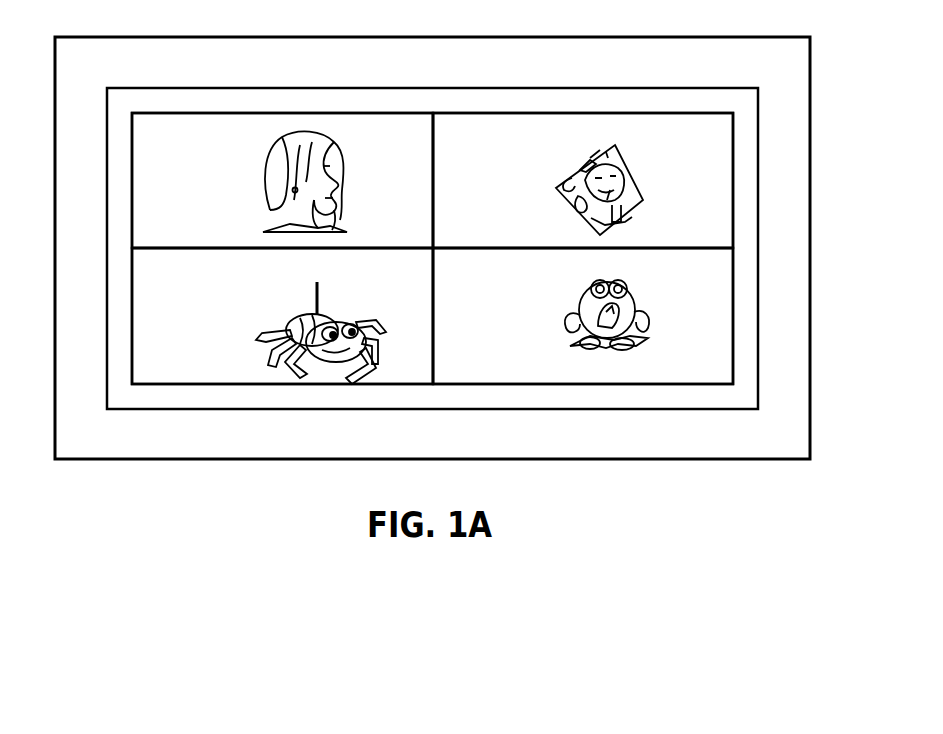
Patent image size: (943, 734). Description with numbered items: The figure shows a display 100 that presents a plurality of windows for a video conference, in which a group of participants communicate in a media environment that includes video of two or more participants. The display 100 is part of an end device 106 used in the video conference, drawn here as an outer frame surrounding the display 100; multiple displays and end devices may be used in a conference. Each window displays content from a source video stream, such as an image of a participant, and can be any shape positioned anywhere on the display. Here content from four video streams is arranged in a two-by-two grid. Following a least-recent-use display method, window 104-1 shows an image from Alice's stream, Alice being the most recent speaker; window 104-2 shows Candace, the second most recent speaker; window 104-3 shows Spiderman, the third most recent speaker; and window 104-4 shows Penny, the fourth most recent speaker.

The display 100 is at (678, 88).
The end device 106 is at (730, 37).
The window 104-1 is at (257, 113).
The window 104-2 is at (555, 112).
The window 104-3 is at (260, 386).
The window 104-4 is at (562, 386).